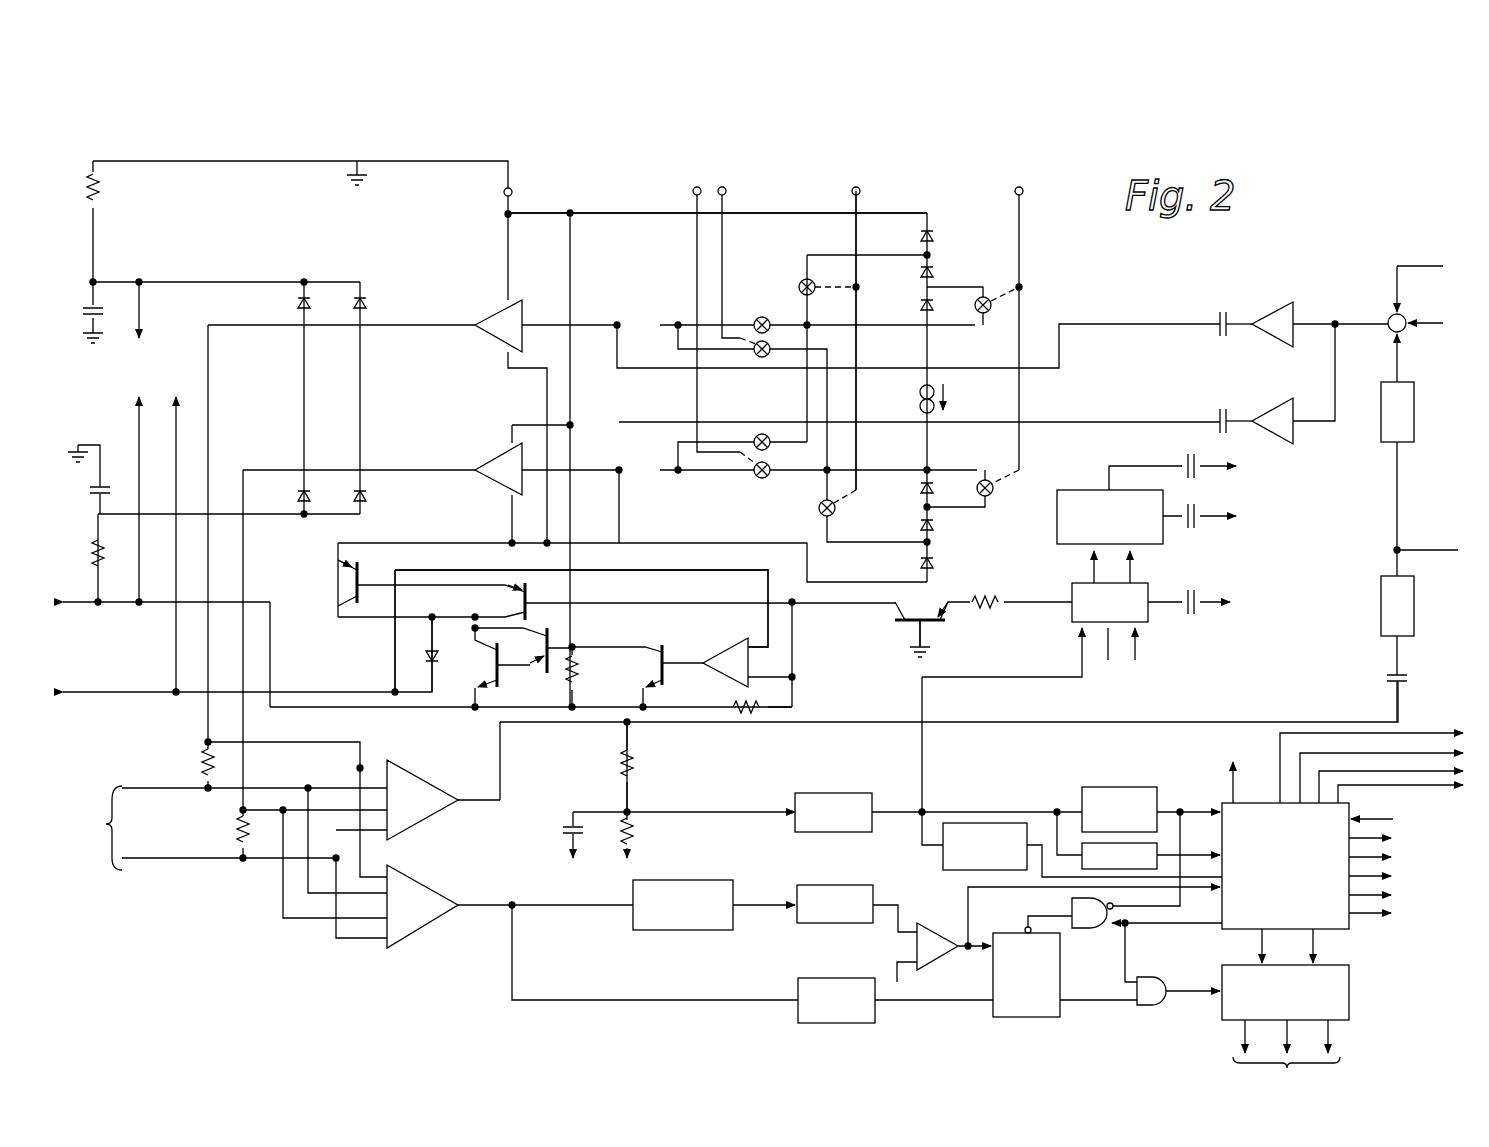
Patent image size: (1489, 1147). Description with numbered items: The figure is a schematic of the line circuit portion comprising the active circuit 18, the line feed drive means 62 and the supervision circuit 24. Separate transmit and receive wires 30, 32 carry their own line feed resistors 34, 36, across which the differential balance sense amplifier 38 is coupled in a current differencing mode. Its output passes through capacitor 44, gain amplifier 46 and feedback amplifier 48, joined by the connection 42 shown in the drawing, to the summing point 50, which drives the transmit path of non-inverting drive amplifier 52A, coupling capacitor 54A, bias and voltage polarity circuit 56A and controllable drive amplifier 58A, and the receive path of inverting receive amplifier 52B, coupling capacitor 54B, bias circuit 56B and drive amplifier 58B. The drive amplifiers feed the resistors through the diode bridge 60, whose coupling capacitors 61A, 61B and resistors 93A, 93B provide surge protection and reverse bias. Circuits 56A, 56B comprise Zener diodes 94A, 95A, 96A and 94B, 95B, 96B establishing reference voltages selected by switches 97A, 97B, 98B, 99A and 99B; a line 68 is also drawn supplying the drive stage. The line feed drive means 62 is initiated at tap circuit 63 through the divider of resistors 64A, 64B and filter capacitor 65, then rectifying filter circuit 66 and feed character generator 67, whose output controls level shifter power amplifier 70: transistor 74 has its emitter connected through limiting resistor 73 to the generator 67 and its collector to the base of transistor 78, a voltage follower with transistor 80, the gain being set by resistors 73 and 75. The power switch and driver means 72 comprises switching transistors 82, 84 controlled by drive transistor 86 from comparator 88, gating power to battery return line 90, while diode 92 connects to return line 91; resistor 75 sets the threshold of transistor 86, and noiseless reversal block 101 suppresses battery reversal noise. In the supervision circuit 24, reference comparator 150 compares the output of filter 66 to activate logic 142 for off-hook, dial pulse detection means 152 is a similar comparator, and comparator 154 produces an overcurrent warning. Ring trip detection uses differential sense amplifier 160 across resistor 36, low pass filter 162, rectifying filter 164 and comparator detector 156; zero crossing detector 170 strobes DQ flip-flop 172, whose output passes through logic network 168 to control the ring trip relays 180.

The active circuit 18 is at (633, 176).
The supervision circuit 24 is at (935, 1015).
The transmit wire 30 is at (206, 716).
The receive wire 32 is at (245, 722).
The line feed resistor 34 is at (204, 765).
The line feed resistor 36 is at (238, 834).
The differential balance sense amplifier 38 is at (440, 770).
The feedback line 42 is at (1393, 480).
The capacitor 44 is at (1385, 675).
The gain amplifier 46 is at (1380, 603).
The feedback amplifier 48 is at (1382, 405).
The summing point 50 is at (1388, 308).
The non-inverting drive amplifier 52A is at (1288, 302).
The receive amplifier 52B is at (1293, 440).
The coupling capacitor 54A is at (1235, 333).
The coupling capacitor 54B is at (1235, 430).
The bias and voltage polarity circuit 56A is at (793, 224).
The bias and voltage polarity circuit 56B is at (815, 512).
The controllable drive amplifier 58A is at (503, 302).
The controllable drive amplifier 58B is at (500, 450).
The diode bridge 60 is at (330, 396).
The coupling capacitor 61A is at (120, 322).
The coupling capacitor 61B is at (106, 482).
The line feed drive means 62 is at (692, 631).
The tap circuit 63 is at (640, 740).
The resistor 64A is at (620, 765).
The resistor 64B is at (640, 838).
The filter capacitor 65 is at (567, 828).
The rectifying filter circuit 66 is at (835, 790).
The feed character generator 67 is at (1142, 624).
The supply line 68 is at (320, 557).
The level shifter power amplifier 70 is at (888, 634).
The power switch and driver means 72 is at (390, 644).
The limiting resistor 73 is at (985, 610).
The transistor 74 is at (932, 621).
The resistor 75 is at (765, 710).
The transistor 78 is at (431, 601).
The transistor 80 is at (421, 580).
The switching transistor 82 is at (496, 666).
The switching transistor 84 is at (525, 650).
The drive transistor 86 is at (634, 676).
The comparator 88 is at (735, 638).
The battery return line 90 is at (138, 610).
The line power source return line 91 is at (130, 702).
The diode 92 is at (432, 645).
The resistor 93A is at (104, 182).
The resistor 93B is at (90, 570).
The Zener diode 94A is at (950, 237).
The Zener diode 94B is at (904, 487).
The Zener diode 95A is at (950, 271).
The Zener diode 95B is at (950, 525).
The Zener diode 96A is at (934, 302).
The Zener diode 96B is at (951, 565).
The switch 97A is at (990, 318).
The switch 97B is at (980, 493).
The switch 98B is at (835, 516).
The switch 99A is at (783, 335).
The switch 99B is at (783, 437).
The noiseless reversal block 101 is at (1080, 490).
The logic 142 is at (1340, 929).
The reference comparator 150 is at (1140, 787).
The dial pulse detection means 152 is at (1082, 850).
The comparator 154 is at (942, 860).
The comparator detector 156 is at (955, 935).
The differential sense amplifier 160 is at (433, 930).
The low pass filter 162 is at (660, 930).
The rectifying filter 164 is at (838, 925).
The logic network 168 is at (1190, 957).
The zero crossing detector 170 is at (798, 1012).
The DQ flip-flop 172 is at (1025, 1017).
The ring trip relays 180 is at (1353, 1000).